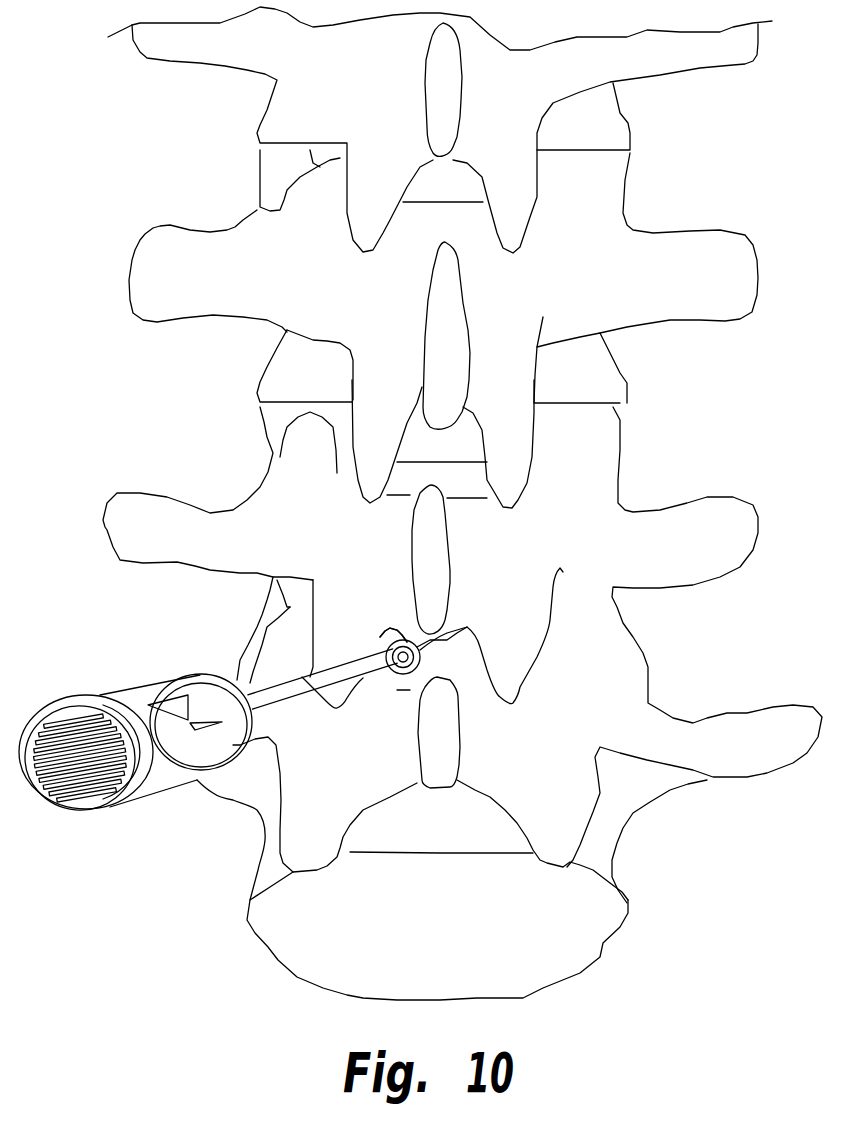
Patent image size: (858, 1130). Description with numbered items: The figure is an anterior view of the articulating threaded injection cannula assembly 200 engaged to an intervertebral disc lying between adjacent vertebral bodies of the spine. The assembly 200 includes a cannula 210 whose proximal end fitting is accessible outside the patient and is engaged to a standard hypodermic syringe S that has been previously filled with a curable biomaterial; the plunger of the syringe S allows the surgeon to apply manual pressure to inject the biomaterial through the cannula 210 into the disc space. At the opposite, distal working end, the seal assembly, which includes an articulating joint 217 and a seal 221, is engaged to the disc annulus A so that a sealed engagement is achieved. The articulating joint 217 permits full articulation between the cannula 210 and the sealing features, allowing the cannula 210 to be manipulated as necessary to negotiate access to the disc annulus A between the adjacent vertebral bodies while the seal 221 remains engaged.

The hypodermic syringe S is at (102, 692).
The injection cannula assembly 200 is at (274, 690).
The seal 221 is at (465, 640).
The disc annulus A is at (467, 660).
The articulating joint 217 is at (397, 688).
The cannula 210 is at (220, 798).